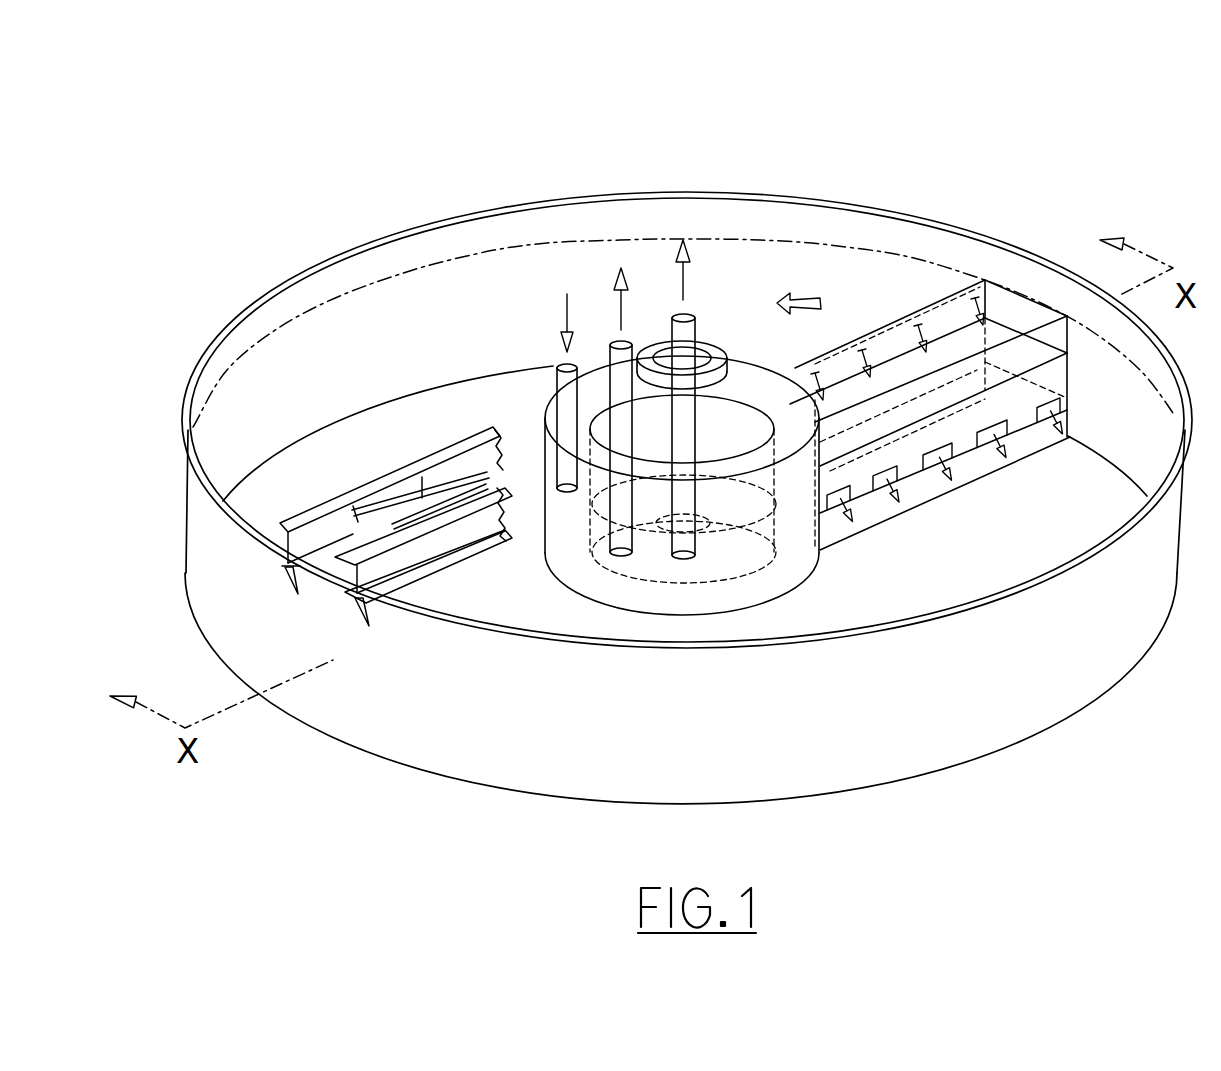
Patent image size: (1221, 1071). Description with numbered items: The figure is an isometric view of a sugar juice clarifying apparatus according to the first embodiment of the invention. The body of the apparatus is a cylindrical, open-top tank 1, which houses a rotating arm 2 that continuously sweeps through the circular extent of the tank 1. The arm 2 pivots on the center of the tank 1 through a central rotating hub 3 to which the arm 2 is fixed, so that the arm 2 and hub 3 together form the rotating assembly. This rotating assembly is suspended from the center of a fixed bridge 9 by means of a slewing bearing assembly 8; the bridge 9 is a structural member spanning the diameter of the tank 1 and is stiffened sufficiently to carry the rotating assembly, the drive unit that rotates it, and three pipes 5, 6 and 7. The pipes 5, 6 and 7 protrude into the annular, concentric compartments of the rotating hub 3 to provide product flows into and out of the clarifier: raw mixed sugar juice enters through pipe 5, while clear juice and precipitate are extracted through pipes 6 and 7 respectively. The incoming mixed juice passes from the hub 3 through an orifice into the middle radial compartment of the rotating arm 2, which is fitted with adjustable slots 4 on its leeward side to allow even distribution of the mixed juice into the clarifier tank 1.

The tank 1 is at (1032, 243).
The rotating arm 2 is at (1030, 290).
The central rotating hub 3 is at (543, 492).
The adjustable slots 4 is at (912, 313).
The pipe 5 is at (556, 362).
The pipe 6 is at (610, 338).
The pipe 7 is at (670, 305).
The slewing bearing assembly 8 is at (713, 337).
The fixed bridge 9 is at (367, 478).